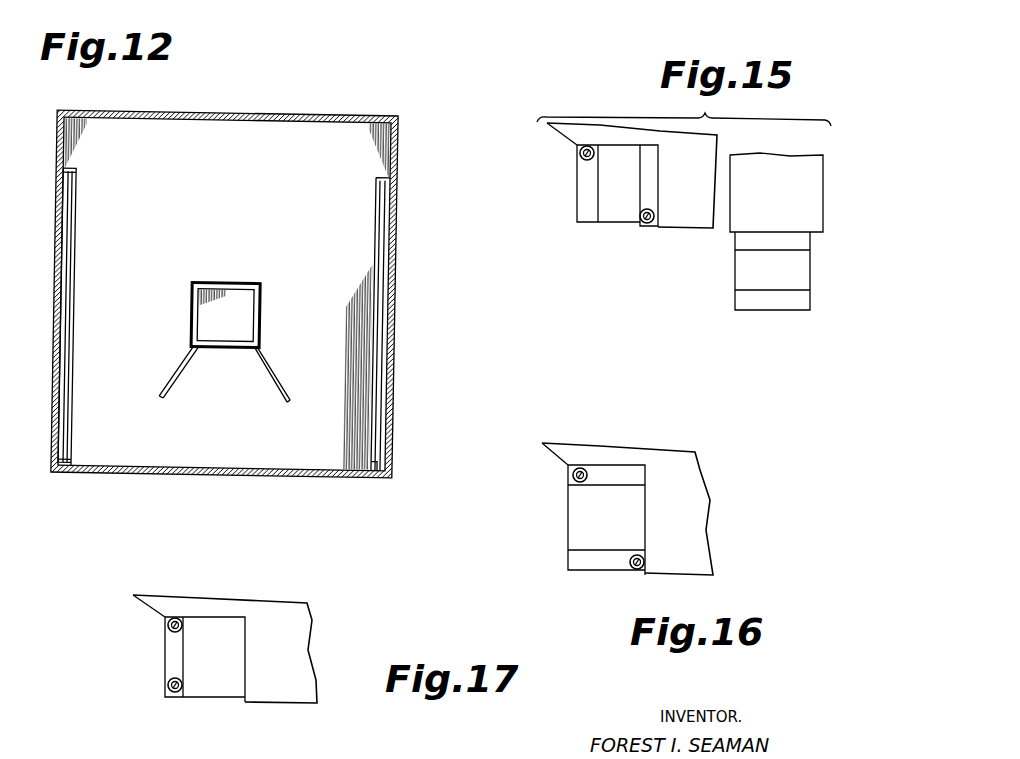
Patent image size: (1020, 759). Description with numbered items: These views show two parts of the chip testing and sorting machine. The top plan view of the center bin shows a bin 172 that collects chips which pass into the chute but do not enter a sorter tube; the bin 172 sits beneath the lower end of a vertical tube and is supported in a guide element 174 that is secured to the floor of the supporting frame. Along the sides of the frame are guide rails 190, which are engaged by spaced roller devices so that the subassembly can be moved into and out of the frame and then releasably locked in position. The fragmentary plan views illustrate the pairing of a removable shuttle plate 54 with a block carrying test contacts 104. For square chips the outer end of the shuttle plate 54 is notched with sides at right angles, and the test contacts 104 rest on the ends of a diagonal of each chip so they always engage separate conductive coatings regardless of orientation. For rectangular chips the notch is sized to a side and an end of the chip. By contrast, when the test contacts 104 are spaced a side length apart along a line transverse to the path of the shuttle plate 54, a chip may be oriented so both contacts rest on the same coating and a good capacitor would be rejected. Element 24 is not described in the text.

In FIG. 12, the guide rails 190 is at (82, 204).
In FIG. 12, the bin 172 is at (222, 347).
In FIG. 12, the guide element 174 is at (262, 346).
In FIG. 15, the shuttle plate 54 is at (710, 157).
In FIG. 16, the shuttle plate 54 is at (692, 460).
In FIG. 17, the shuttle plate 54 is at (307, 608).
In FIG. 15, the mounting block 24 is at (733, 270).
In FIG. 16, the mounting block 24 is at (568, 518).
In FIG. 17, the mounting block 24 is at (168, 655).
In FIG. 15, the test contacts 104 is at (641, 212).
In FIG. 16, the test contacts 104 is at (634, 555).
In FIG. 17, the test contacts 104 is at (183, 677).